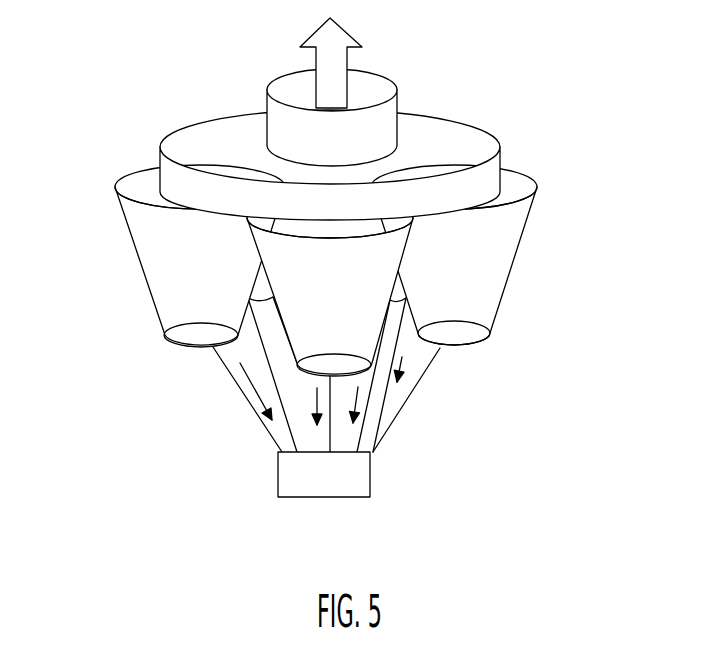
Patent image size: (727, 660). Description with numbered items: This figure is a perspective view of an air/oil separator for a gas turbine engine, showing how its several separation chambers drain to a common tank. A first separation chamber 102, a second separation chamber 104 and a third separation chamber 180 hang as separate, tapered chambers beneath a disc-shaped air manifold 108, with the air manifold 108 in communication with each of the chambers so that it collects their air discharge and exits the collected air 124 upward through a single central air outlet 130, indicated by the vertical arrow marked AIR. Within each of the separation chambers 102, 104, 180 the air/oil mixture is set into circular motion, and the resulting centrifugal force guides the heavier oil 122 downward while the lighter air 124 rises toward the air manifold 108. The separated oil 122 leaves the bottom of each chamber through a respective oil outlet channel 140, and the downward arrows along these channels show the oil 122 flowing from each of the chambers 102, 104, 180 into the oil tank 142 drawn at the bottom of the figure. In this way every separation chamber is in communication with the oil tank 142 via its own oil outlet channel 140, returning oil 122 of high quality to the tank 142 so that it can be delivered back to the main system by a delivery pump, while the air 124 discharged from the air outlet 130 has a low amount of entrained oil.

The first separation chamber 102 is at (147, 240).
The second separation chamber 104 is at (345, 313).
The air manifold 108 is at (453, 150).
The oil 122 is at (283, 410).
The air 124 is at (316, 58).
The air outlet 130 is at (397, 90).
The oil outlet channel 140 is at (240, 363).
The oil tank 142 is at (371, 468).
The third separation chamber 180 is at (497, 251).